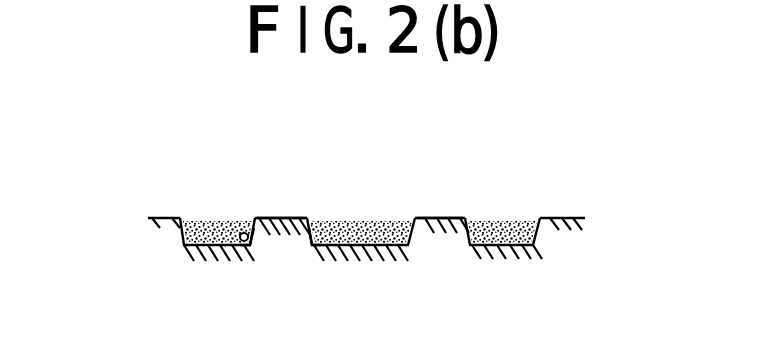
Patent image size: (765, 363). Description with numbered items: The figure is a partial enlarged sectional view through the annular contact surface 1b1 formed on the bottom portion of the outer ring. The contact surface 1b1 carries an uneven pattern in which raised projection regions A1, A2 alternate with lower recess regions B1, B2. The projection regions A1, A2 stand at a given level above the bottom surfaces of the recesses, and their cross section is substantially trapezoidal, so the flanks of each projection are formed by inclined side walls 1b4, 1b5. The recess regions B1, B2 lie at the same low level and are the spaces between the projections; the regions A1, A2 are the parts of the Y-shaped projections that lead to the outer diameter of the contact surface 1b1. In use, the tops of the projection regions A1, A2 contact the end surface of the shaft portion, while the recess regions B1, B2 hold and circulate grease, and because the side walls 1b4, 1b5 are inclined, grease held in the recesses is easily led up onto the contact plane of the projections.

The annular contact surface 1b1 is at (182, 175).
The region B1 (recess) B1 is at (217, 240).
The region B2 (recess) B2 is at (367, 240).
The region A1 (projection head) A1 is at (281, 218).
The region A2 (projection head) A2 is at (438, 218).
The side wall 1b4 is at (246, 241).
The side wall 1b5 is at (313, 246).